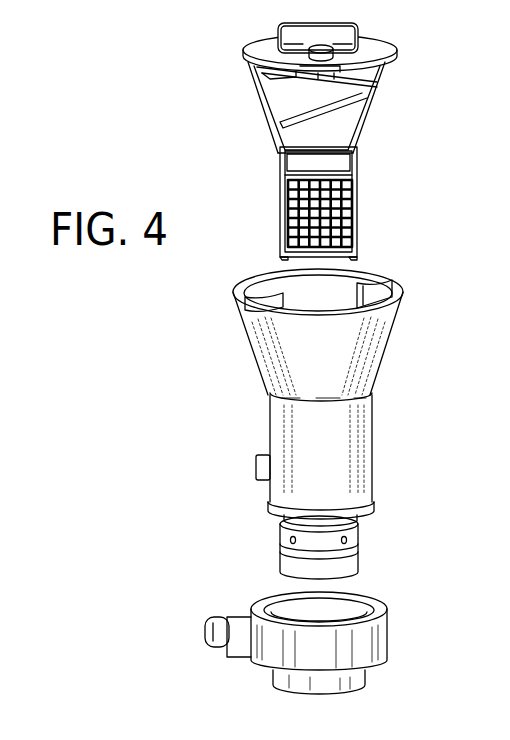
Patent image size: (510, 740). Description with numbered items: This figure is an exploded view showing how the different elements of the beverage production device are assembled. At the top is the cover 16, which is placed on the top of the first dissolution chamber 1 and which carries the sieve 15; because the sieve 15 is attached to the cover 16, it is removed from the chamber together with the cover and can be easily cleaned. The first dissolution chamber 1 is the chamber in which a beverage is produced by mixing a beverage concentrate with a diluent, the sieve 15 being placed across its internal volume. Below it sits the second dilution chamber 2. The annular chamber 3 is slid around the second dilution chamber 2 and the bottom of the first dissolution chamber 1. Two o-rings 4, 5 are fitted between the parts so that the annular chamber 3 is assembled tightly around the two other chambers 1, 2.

The first dissolution chamber 1 is at (335, 365).
The second dilution chamber 2 is at (315, 547).
The annular chamber 3 is at (340, 652).
The o-ring 4 is at (268, 498).
The o-ring 5 is at (282, 547).
The sieve 15 is at (354, 212).
The cover 16 is at (392, 48).